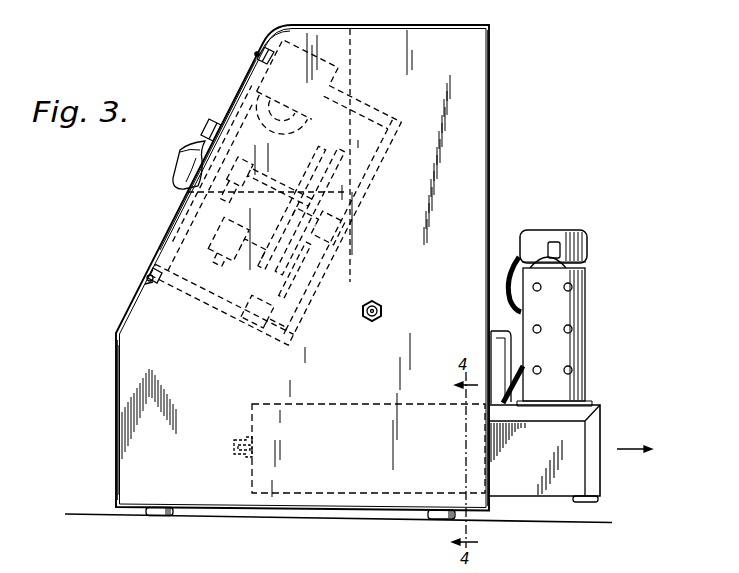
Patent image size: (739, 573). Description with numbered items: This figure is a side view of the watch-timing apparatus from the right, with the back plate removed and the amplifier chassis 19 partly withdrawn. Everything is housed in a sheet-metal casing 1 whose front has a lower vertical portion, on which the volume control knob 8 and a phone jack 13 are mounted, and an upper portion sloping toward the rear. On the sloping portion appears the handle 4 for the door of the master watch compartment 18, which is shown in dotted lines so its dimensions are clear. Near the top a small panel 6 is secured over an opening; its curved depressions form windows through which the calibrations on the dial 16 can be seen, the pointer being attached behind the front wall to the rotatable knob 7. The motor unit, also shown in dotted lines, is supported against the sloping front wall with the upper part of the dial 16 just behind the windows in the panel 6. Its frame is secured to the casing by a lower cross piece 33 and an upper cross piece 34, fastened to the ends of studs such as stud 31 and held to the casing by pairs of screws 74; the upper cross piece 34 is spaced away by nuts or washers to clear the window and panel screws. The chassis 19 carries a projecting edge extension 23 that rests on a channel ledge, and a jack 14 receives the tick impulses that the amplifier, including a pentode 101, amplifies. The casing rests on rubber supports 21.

The casing 1 is at (485, 131).
The handle 4 is at (202, 126).
The panel 6 is at (252, 73).
The rotatable knob 7 is at (176, 172).
The volume control knob 8 is at (232, 443).
The phone jack 13 is at (240, 454).
The jack 14 is at (384, 312).
The dial 16 is at (178, 258).
The master watch compartment 18 is at (332, 34).
The chassis 19 is at (580, 428).
The feet 21 is at (156, 518).
The extension 23 is at (588, 500).
The stud 31 is at (197, 305).
The lower cross piece 33 is at (149, 285).
The upper cross piece 34 is at (273, 29).
The screws 74 is at (258, 50).
The pentode 101 is at (574, 347).